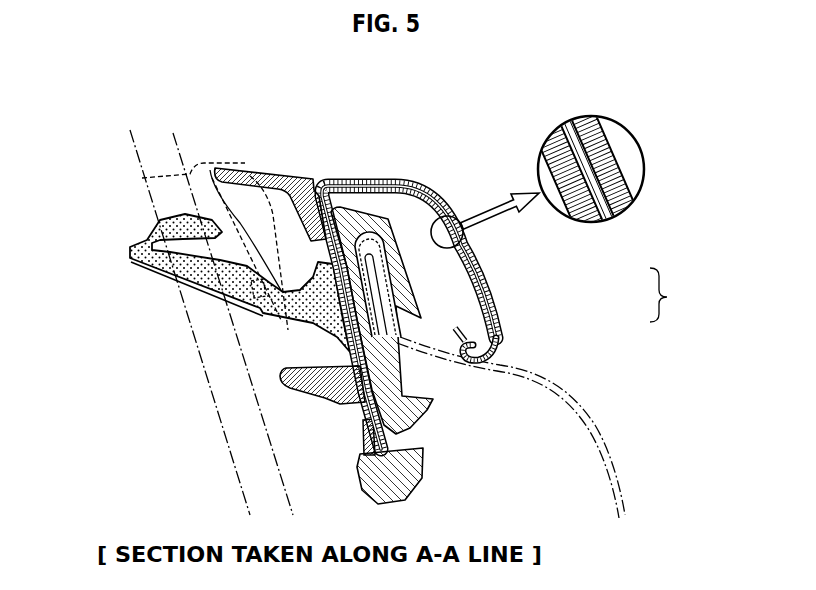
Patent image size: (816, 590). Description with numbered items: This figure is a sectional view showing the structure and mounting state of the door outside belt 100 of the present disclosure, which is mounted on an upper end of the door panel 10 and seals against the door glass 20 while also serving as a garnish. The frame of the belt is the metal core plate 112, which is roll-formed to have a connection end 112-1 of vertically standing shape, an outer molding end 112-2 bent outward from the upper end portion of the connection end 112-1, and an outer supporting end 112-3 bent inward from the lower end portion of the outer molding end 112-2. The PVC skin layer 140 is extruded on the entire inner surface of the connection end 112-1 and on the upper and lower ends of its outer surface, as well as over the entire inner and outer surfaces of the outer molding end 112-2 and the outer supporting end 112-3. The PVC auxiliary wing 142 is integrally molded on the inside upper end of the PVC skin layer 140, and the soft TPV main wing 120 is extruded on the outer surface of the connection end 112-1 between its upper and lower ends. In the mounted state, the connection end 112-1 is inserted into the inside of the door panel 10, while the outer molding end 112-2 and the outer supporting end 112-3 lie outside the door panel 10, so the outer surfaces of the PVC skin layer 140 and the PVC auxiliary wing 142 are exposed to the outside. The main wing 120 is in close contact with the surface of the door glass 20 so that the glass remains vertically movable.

The door panel 10 is at (573, 404).
The door glass 20 is at (140, 178).
The door outside belt 100 is at (387, 159).
The core plate 112 is at (628, 190).
The connection end 112-1 is at (343, 307).
The outer molding end 112-2 is at (478, 278).
The outer supporting end 112-3 is at (498, 327).
The main wing 120 is at (192, 270).
The PVC skin layer 140 is at (344, 176).
The PVC auxiliary wing 142 is at (240, 167).